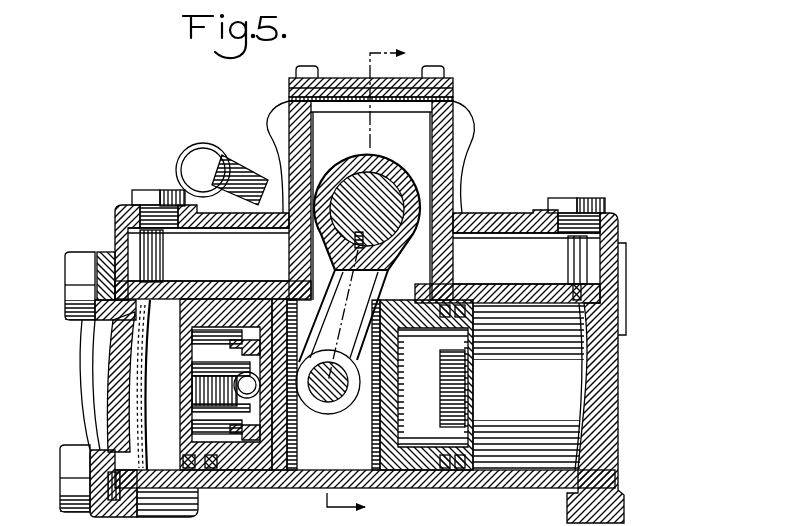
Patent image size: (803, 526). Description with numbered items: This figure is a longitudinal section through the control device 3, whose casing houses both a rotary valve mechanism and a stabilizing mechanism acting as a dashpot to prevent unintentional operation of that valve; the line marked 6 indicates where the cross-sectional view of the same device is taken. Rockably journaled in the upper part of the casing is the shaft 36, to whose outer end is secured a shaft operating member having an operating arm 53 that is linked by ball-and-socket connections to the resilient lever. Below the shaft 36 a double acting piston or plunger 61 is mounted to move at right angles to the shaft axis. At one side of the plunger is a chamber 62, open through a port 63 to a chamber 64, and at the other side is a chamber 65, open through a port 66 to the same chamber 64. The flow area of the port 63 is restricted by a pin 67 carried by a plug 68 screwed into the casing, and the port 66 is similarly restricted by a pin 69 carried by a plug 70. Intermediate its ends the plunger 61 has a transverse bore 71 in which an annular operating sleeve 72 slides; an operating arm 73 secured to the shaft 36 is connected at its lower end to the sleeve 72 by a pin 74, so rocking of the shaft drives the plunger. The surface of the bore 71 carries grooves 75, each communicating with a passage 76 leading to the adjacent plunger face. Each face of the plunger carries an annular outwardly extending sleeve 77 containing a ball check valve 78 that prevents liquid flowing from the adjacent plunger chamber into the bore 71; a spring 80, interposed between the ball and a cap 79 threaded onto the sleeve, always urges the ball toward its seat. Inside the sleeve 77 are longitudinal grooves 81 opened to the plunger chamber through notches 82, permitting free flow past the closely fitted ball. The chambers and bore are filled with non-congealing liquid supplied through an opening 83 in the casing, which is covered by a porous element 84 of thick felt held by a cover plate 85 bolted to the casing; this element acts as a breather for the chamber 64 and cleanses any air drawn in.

The control device 3 is at (460, 99).
The section line 6— 6 is at (373, 281).
The shaft 36 is at (372, 188).
The operating arm 53 is at (244, 175).
The double acting piston or plunger 61 is at (205, 298).
The chamber 62 is at (138, 300).
The port 63 is at (95, 318).
The chamber 64 is at (462, 250).
The chamber 65 is at (562, 382).
The port 66 is at (582, 302).
The pin 67 is at (162, 258).
The plug 68 is at (150, 190).
The pin 69 is at (568, 264).
The plug 70 is at (566, 205).
The transverse bore 71 is at (383, 300).
The annular operating sleeve 72 is at (370, 473).
The operating arm 73 is at (342, 297).
The pin 74 is at (330, 404).
The grooves 75 is at (275, 470).
The passage 76 is at (393, 385).
The sleeve 77 is at (440, 406).
The ball check valve 78 is at (215, 400).
The cap 79 is at (455, 372).
The spring 80 is at (240, 384).
The longitudinal grooves 81 is at (192, 332).
The notches 82 is at (222, 356).
The opening 83 is at (292, 100).
The porous element 84 is at (333, 82).
The cover plate 85 is at (290, 80).